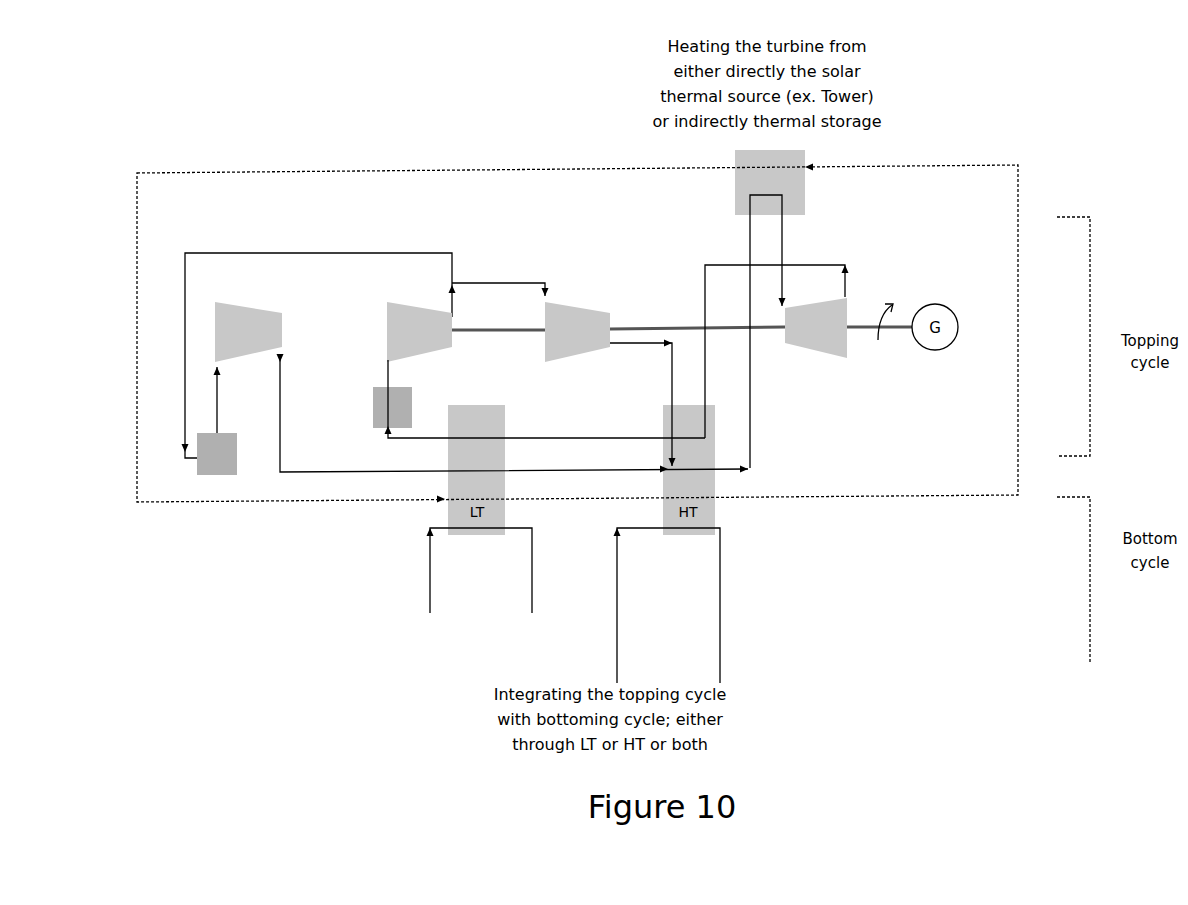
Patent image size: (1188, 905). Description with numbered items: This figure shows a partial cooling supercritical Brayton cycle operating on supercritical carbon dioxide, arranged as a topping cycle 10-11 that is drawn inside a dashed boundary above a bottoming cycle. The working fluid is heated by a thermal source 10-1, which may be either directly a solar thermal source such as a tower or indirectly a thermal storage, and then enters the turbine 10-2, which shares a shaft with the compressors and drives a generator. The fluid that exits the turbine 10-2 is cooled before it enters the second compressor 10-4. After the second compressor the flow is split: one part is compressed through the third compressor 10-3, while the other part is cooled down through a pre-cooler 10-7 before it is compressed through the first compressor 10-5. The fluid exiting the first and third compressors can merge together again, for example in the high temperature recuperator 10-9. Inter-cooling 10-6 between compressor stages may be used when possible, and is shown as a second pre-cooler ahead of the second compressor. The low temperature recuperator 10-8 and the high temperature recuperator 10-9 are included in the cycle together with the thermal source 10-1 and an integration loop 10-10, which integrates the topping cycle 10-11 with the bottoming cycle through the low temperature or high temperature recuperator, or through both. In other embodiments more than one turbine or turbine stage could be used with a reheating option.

The thermal source 10-1 is at (797, 213).
The turbine 10-2 is at (843, 357).
The third compressor C3 10-3 is at (580, 319).
The second compressor C2 10-4 is at (414, 314).
The first compressor C1 10-5 is at (248, 323).
The inter-cooling 10-6 is at (395, 398).
The pre-cooler 10-7 is at (225, 463).
The low temperature recuperator (LTR) 10-8 is at (513, 413).
The high temperature recuperator (HTR) 10-9 is at (716, 446).
The integration loop 10-10 is at (729, 256).
The topping cycle 10-11 is at (607, 333).